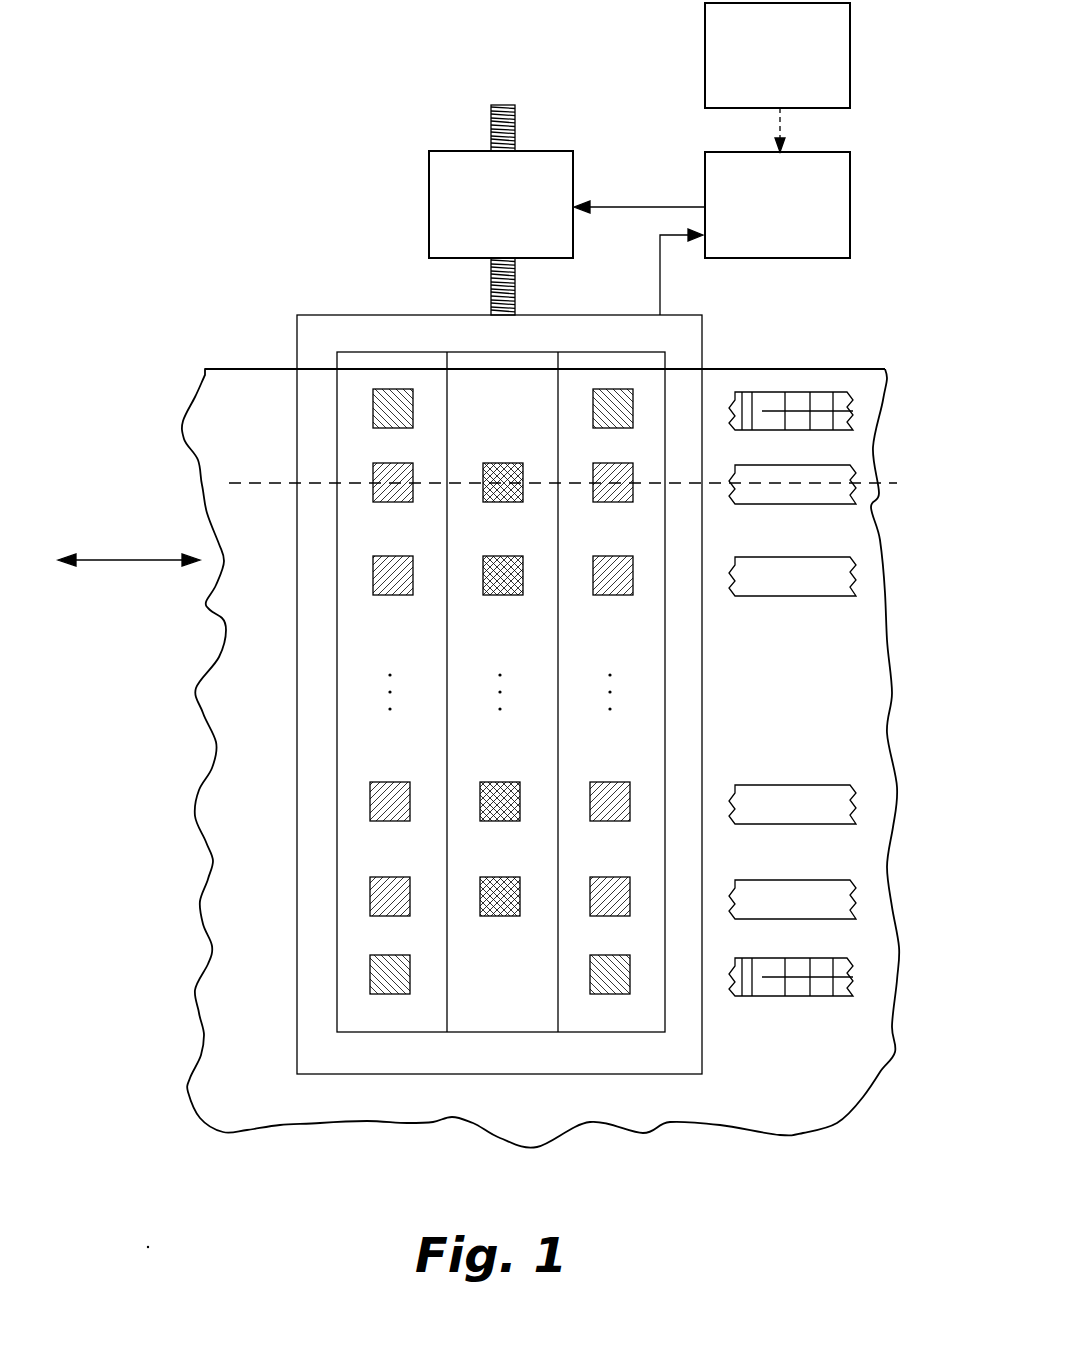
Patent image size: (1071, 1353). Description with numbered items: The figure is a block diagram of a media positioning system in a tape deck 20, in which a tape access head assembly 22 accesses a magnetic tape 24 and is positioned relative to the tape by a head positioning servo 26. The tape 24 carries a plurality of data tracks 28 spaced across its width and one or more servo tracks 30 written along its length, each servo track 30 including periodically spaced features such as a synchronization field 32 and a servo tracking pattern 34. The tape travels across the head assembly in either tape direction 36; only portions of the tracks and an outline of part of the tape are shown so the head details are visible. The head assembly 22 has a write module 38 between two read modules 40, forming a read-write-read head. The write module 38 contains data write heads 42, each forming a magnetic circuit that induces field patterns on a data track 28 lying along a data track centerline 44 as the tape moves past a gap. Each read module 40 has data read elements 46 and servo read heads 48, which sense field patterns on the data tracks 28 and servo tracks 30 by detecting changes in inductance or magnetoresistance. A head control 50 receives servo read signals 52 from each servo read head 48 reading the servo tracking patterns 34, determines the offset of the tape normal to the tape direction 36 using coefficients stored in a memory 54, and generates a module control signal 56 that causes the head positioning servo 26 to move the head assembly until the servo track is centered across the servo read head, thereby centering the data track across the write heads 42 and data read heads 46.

The tape deck 20 is at (167, 260).
The tape access head assembly 22 is at (345, 300).
The magnetic tape 24 is at (880, 366).
The head positioning servo 26 is at (543, 150).
The data tracks 28 is at (800, 506).
The servo tracks 30 is at (800, 432).
The synchronization field 32 is at (745, 390).
The servo tracking pattern 34 is at (815, 372).
The tape direction 36 is at (138, 565).
The write module 38 is at (474, 1034).
The read modules 40 is at (360, 1034).
The data write heads 42 is at (492, 504).
The data track centerline 44 is at (262, 482).
The data read elements 46 is at (382, 504).
The servo read heads 48 is at (382, 430).
The head control 50 is at (853, 210).
The servo read signals 52 is at (660, 289).
The memory 54 is at (853, 80).
The module control signal 56 is at (618, 205).